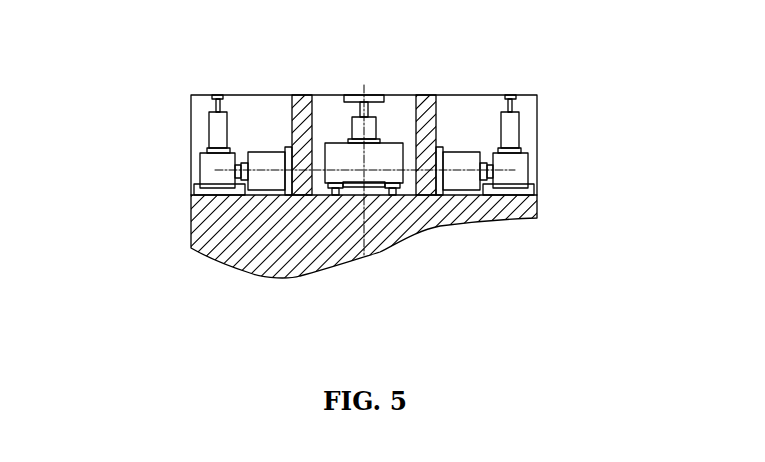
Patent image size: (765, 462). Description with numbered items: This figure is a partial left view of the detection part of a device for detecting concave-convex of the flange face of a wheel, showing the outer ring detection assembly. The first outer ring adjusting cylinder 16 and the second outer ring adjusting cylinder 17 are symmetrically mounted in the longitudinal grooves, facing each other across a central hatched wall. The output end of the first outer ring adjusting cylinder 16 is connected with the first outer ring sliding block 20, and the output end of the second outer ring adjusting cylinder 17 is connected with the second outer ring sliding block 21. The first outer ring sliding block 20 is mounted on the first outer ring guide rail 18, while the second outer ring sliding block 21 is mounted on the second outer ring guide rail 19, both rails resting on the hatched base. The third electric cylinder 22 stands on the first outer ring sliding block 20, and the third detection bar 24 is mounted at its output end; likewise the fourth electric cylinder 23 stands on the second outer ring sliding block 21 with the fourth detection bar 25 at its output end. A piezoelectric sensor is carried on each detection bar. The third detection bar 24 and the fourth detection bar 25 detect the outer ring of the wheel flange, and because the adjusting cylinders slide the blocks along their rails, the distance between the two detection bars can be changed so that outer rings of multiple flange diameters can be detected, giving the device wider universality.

The first outer ring adjusting cylinder 16 is at (260, 152).
The second outer ring adjusting cylinder 17 is at (467, 152).
The first outer ring guide rail 18 is at (192, 195).
The second outer ring guide rail 19 is at (533, 195).
The first outer ring sliding block 20 is at (207, 168).
The second outer ring sliding block 21 is at (517, 168).
The third electric cylinder 22 is at (212, 132).
The fourth electric cylinder 23 is at (513, 132).
The third detection bar 24 is at (217, 97).
The fourth detection bar 25 is at (511, 97).